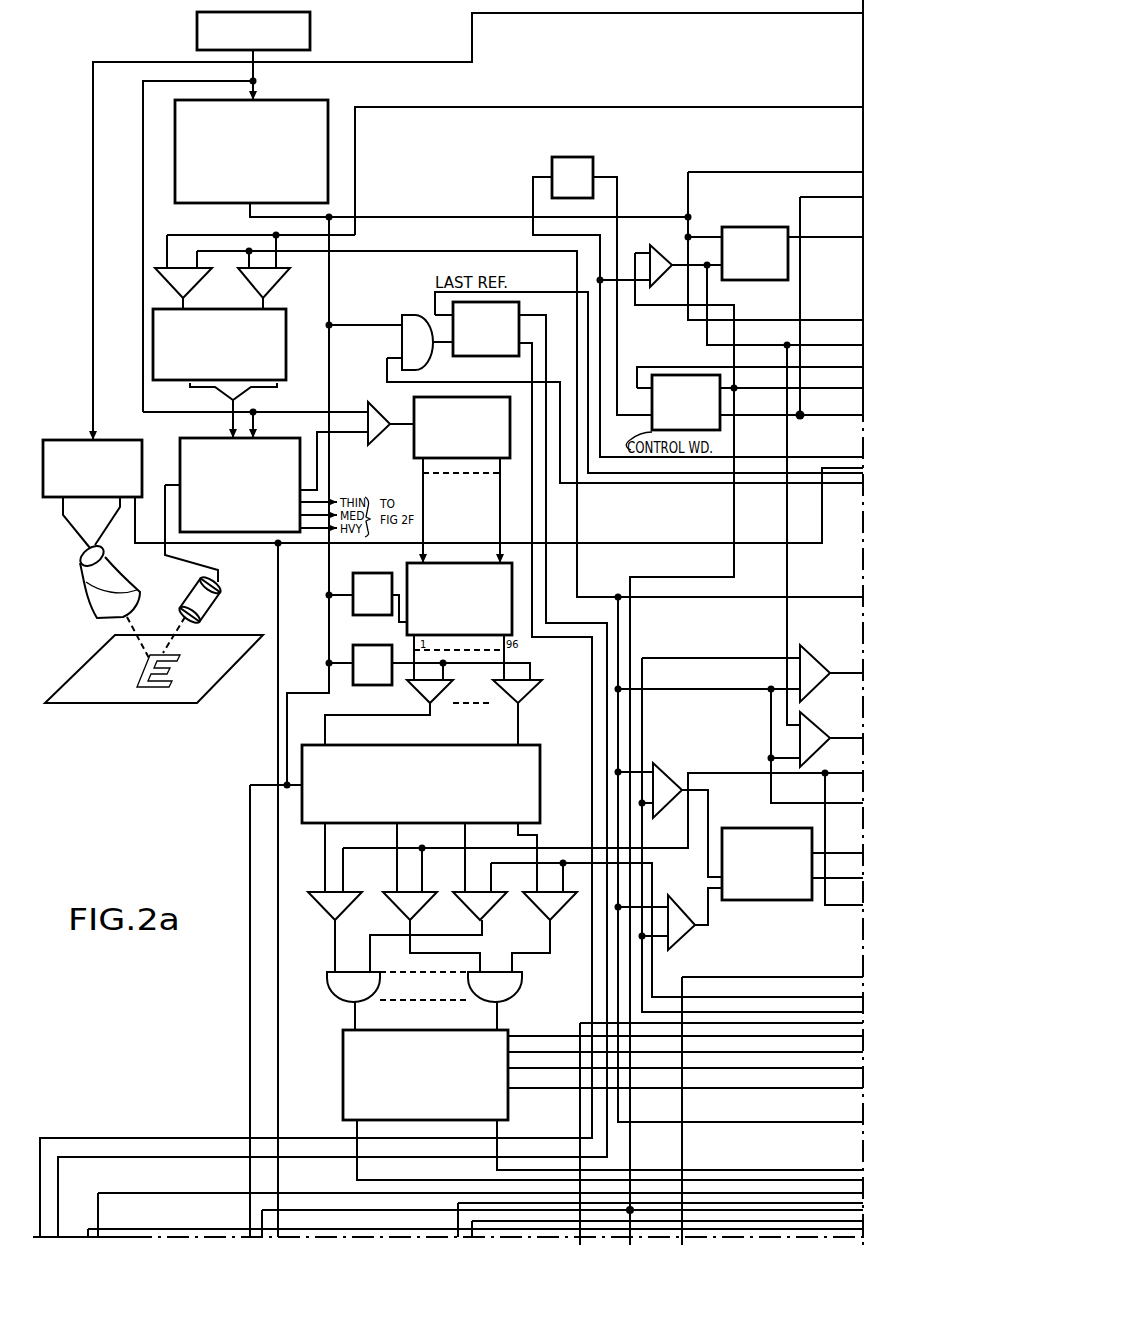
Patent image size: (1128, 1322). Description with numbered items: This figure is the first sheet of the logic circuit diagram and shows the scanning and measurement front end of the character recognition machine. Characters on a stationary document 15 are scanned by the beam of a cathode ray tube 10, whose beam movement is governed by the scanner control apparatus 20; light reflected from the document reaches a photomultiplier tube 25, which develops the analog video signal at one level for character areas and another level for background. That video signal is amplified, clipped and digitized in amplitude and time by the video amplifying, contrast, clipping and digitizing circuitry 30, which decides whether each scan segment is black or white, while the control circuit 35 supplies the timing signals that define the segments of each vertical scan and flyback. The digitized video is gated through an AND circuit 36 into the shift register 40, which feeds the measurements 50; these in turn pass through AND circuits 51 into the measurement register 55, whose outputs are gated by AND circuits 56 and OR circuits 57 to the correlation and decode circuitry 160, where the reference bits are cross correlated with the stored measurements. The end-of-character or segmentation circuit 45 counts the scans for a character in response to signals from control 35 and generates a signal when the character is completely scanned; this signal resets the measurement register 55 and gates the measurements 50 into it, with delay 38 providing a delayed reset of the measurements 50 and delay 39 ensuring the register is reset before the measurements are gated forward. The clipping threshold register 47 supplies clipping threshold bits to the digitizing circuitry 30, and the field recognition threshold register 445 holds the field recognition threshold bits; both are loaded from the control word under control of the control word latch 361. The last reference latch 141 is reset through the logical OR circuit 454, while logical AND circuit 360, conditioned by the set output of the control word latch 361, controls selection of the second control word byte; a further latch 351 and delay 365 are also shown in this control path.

The cathode ray tube 10 is at (90, 606).
The document 15 is at (180, 706).
The scanner control apparatus 20 is at (78, 436).
The photomultiplier tube 25 is at (213, 608).
The video amplifying, contrast, clipping and digitizing circuitry 30 is at (180, 440).
The control circuit 35 is at (312, 44).
The AND gate 36 is at (371, 446).
The delay 38 is at (358, 573).
The delay 39 is at (360, 645).
The shift register 40 is at (414, 458).
The end-of-character or segmentation circuit 45 is at (288, 100).
The clipping threshold register 47 is at (286, 311).
The measurements 50 is at (407, 566).
The AND gates 51 is at (500, 690).
The measurement register 55 is at (540, 746).
The AND gates 56 is at (536, 908).
The OR gates 57 is at (536, 994).
The last reference latch 141 is at (500, 358).
The correlation and decode circuitry 160 is at (343, 1091).
The latch 351 is at (770, 226).
The logical AND circuit 360 is at (668, 254).
The control word latch 361 is at (682, 367).
The delay 365 is at (594, 170).
The field recognition threshold register 445 is at (745, 900).
The logical OR circuit 454 is at (404, 314).